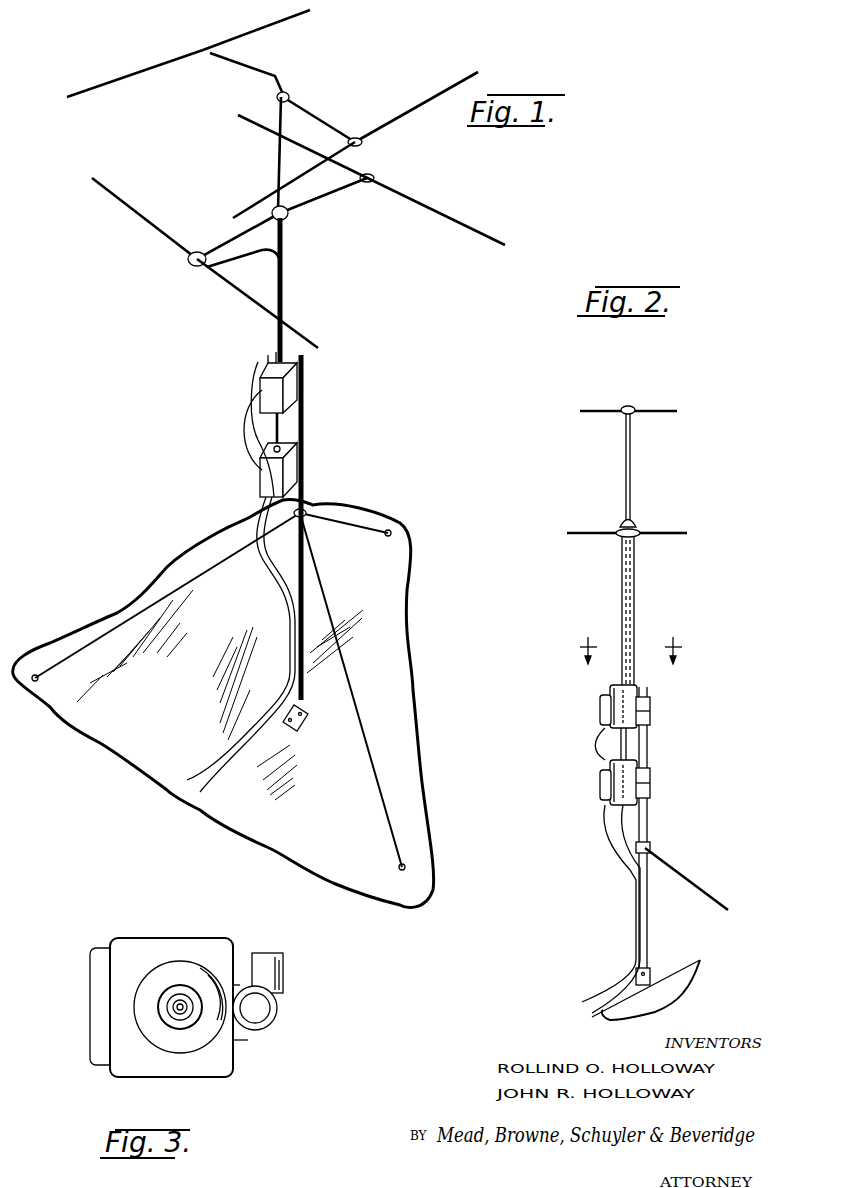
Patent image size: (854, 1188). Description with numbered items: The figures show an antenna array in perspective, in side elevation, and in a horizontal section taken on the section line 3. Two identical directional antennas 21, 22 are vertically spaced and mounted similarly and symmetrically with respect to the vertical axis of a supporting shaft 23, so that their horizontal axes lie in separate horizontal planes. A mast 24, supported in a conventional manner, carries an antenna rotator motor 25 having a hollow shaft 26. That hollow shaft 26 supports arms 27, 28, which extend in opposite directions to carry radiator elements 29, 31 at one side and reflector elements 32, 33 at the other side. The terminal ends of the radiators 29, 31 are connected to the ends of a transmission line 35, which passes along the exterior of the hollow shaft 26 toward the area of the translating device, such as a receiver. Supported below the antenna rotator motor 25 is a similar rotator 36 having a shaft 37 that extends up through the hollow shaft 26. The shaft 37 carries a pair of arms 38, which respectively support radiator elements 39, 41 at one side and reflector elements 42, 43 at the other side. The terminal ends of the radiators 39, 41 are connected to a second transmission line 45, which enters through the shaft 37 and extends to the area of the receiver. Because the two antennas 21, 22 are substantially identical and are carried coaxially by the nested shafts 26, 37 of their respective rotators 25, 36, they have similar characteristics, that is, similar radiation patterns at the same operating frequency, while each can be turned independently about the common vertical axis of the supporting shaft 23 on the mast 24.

In FIG. 2, the section line 3 is at (629, 646).
In FIG. 1, the directional antenna 21 is at (314, 234).
In FIG. 1, the directional antenna 22 is at (328, 78).
In FIG. 1, the supporting shaft 23 is at (288, 92).
In FIG. 1, the mast 24 is at (310, 490).
In FIG. 2, the mast 24 is at (652, 912).
In FIG. 3, the mast 24 is at (278, 1007).
In FIG. 1, the antenna rotator motor 25 is at (305, 392).
In FIG. 2, the antenna rotator motor 25 is at (650, 710).
In FIG. 3, the antenna rotator motor 25 is at (236, 1070).
In FIG. 1, the hollow shaft 26 is at (285, 258).
In FIG. 2, the hollow shaft 26 is at (634, 630).
In FIG. 3, the hollow shaft 26 is at (188, 982).
In FIG. 1, the arm 27 is at (228, 233).
In FIG. 2, the arm 27 is at (585, 537).
In FIG. 1, the arm 28 is at (318, 200).
In FIG. 2, the arm 28 is at (672, 537).
In FIG. 1, the radiator element 29 is at (118, 208).
In FIG. 1, the radiator element 31 is at (242, 311).
In FIG. 2, the radiator element 31 is at (580, 530).
In FIG. 1, the reflector element 32 is at (362, 172).
In FIG. 1, the reflector element 33 is at (425, 205).
In FIG. 2, the reflector element 33 is at (700, 521).
In FIG. 1, the transmission line 35 is at (250, 262).
In FIG. 1, the rotator 36 is at (305, 472).
In FIG. 2, the rotator 36 is at (650, 786).
In FIG. 1, the shaft 37 is at (272, 164).
In FIG. 2, the shaft 37 is at (632, 476).
In FIG. 3, the shaft 37 is at (176, 990).
In FIG. 1, the arm 38 is at (232, 70).
In FIG. 1, the radiator element 39 is at (126, 73).
In FIG. 1, the radiator element 41 is at (253, 27).
In FIG. 1, the reflector element 42 is at (254, 200).
In FIG. 2, the reflector element 42 is at (598, 408).
In FIG. 1, the reflector element 43 is at (420, 115).
In FIG. 2, the reflector element 43 is at (680, 398).
In FIG. 1, the transmission line 45 is at (277, 74).
In FIG. 3, the transmission line 45 is at (165, 1015).